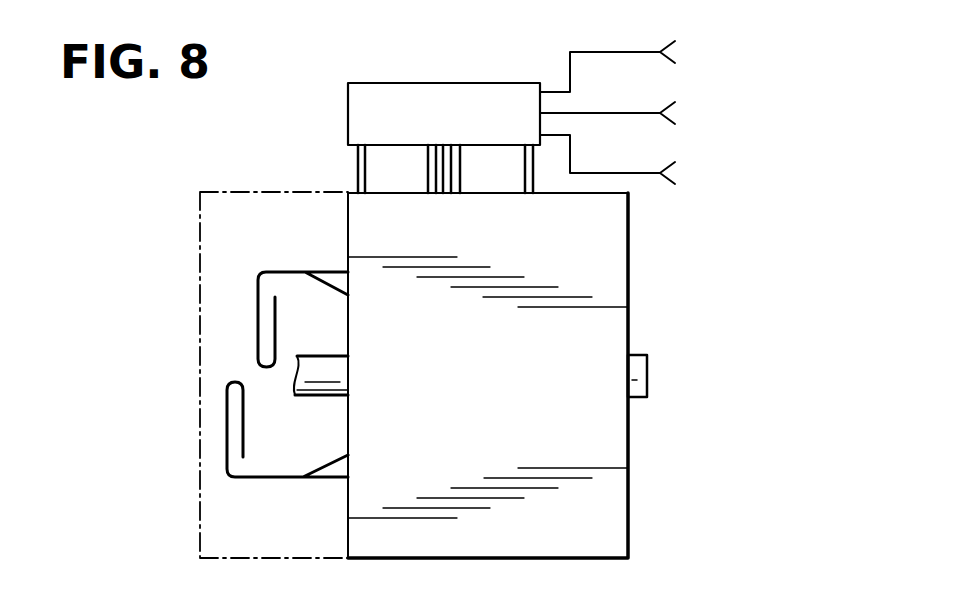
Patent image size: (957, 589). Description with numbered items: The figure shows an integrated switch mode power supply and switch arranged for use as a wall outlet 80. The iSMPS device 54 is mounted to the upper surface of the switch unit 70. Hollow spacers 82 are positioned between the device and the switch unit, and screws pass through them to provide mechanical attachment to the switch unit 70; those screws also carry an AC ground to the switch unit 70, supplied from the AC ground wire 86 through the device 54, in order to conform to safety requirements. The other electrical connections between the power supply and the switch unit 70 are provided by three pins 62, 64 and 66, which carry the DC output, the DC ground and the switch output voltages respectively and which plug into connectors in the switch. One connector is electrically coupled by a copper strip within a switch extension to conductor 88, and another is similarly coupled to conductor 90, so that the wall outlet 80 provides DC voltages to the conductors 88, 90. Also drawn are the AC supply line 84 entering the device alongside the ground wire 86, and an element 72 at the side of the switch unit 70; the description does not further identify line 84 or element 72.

The iSMPS device 54 is at (405, 83).
The pin 62 is at (428, 168).
The pin 64 is at (443, 150).
The pin 66 is at (461, 168).
The switch unit 70 is at (613, 442).
The mounting bar 72 is at (333, 381).
The wall outlet 80 is at (722, 530).
The hollow spacer 82 is at (356, 170).
The 120 VAC line 84 is at (600, 52).
The AC ground wire 86 is at (600, 113).
The conductor 88 is at (600, 173).
The conductor 90 is at (226, 403).